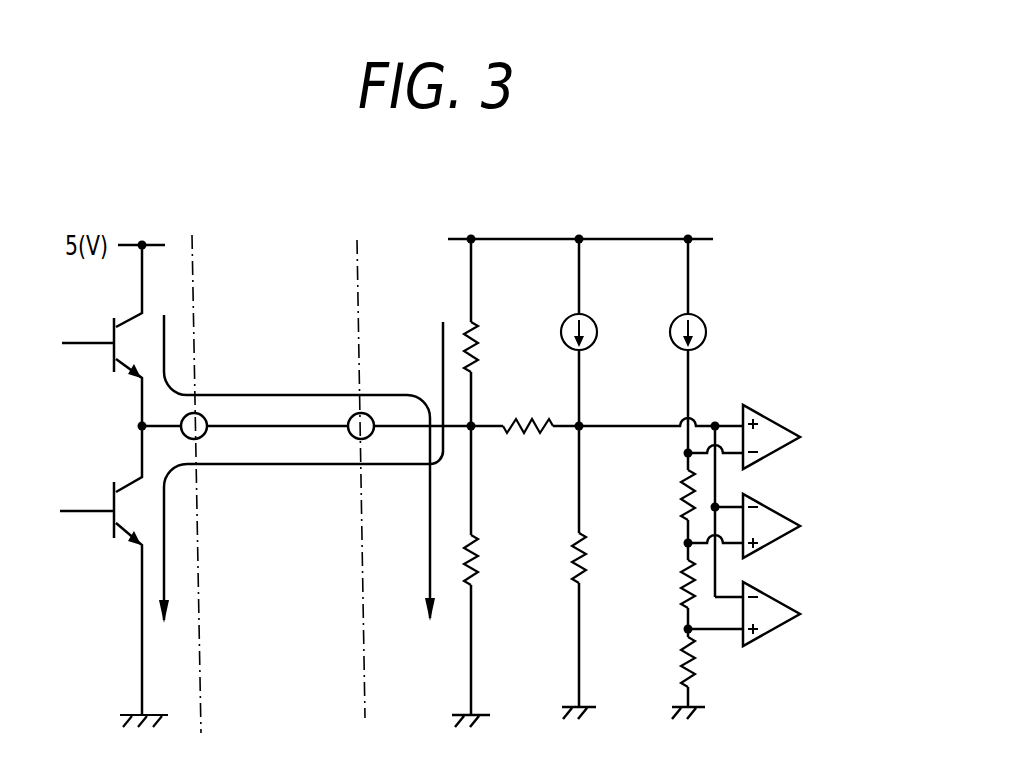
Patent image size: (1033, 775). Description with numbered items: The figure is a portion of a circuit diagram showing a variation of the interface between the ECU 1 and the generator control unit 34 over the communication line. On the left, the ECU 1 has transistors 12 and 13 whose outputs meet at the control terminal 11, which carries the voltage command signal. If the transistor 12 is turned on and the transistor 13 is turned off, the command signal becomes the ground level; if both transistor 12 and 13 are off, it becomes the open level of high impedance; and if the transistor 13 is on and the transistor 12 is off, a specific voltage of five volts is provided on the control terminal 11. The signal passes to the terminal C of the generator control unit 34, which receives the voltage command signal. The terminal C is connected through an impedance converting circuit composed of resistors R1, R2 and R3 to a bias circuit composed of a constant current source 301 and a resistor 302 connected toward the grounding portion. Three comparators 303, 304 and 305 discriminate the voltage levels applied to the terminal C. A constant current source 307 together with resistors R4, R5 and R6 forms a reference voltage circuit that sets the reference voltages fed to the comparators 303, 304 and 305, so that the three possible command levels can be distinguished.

The ECU 1 is at (182, 211).
The control terminal 11 is at (198, 413).
The transistor 12 is at (115, 530).
The transistor 13 is at (112, 362).
The terminal C is at (368, 413).
The generator control unit 34 is at (505, 206).
The resistor R1 is at (476, 351).
The resistor R2 is at (476, 548).
The resistor R3 is at (533, 432).
The resistor R4 is at (683, 482).
The resistor R5 is at (683, 565).
The resistor R6 is at (683, 666).
The constant current source 301 is at (595, 316).
The resistor 302 is at (583, 552).
The comparator 303 is at (770, 410).
The comparator 304 is at (778, 511).
The comparator 305 is at (790, 601).
The constant current source 307 is at (704, 316).